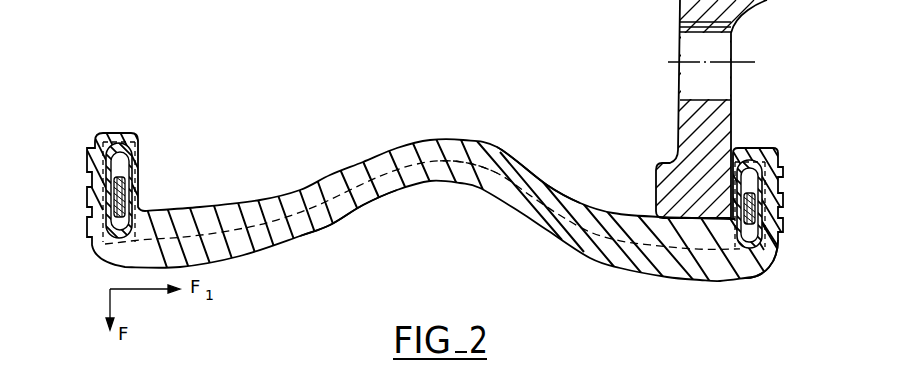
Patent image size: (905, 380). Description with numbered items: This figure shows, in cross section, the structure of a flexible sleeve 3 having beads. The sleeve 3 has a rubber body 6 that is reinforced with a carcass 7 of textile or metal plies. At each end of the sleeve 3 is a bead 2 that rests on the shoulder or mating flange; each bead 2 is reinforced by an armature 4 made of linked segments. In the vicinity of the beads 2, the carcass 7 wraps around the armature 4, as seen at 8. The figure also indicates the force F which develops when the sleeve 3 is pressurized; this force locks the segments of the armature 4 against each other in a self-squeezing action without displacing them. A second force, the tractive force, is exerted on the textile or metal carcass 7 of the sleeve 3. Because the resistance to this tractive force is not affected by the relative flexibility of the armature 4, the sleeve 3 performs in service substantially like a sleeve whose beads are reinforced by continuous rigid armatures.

The bead 2 is at (777, 148).
The sleeve 3 is at (426, 138).
The armature with linked segments 4 is at (770, 256).
The rubber body 6 is at (345, 200).
The carcass of textile or metal plies 7 is at (493, 153).
The region where carcass surrounds armature 8 is at (138, 172).